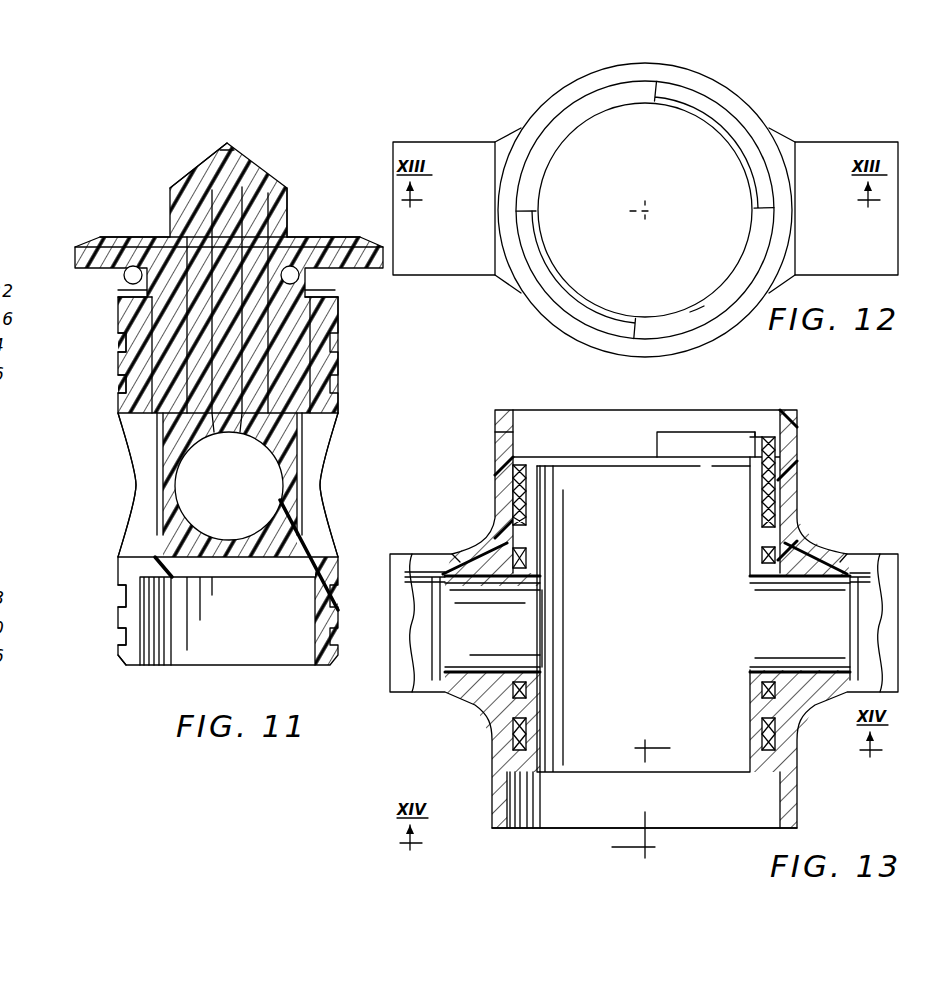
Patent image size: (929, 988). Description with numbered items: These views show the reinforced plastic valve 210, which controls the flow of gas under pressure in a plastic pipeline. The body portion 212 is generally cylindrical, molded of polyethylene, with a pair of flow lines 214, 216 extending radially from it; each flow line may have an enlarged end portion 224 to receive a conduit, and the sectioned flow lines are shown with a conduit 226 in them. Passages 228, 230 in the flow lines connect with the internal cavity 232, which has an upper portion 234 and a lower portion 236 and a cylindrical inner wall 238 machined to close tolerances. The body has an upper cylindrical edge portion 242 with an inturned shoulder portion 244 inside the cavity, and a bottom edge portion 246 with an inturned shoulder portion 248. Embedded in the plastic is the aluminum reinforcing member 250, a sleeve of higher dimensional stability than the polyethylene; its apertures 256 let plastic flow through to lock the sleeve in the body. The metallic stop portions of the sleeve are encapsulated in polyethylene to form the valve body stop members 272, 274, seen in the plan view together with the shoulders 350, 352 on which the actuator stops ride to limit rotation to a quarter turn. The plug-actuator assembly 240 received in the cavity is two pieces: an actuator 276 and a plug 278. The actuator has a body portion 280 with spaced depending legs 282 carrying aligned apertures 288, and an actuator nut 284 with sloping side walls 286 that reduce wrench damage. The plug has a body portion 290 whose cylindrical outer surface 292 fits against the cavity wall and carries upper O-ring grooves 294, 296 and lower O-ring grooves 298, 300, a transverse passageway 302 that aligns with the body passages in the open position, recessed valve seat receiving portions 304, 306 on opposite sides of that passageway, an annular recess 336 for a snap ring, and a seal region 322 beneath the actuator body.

In FIG. 12, the reinforced plastic valve 210 is at (531, 95).
In FIG. 13, the body portion 212 is at (855, 440).
In FIG. 13, the flow line 214 is at (440, 553).
In FIG. 13, the flow line 216 is at (832, 555).
In FIG. 13, the enlarged end portion 224 is at (866, 600).
In FIG. 13, the left tube 226 is at (418, 590).
In FIG. 13, the passage 228 is at (500, 638).
In FIG. 13, the passage 230 is at (802, 628).
In FIG. 13, the internal cavity 232 is at (662, 610).
In FIG. 13, the upper portion 234 is at (722, 495).
In FIG. 13, the lower portion 236 is at (720, 750).
In FIG. 13, the cylindrical inner wall 238 is at (752, 697).
In FIG. 11, the plug-actuator assembly 240 is at (124, 160).
In FIG. 13, the upper cylindrical edge portion 242 is at (786, 407).
In FIG. 13, the inturned shoulder portion 244 is at (513, 425).
In FIG. 13, the bottom edge portion 246 is at (504, 830).
In FIG. 13, the inturned shoulder portion 248 is at (530, 770).
In FIG. 13, the reinforcing member 250 is at (515, 476).
In FIG. 13, the apertures 256 is at (525, 535).
In FIG. 12, the valve body stop member 272 is at (720, 118).
In FIG. 13, the valve body stop member 272 is at (690, 440).
In FIG. 12, the valve body stop member 274 is at (560, 292).
In FIG. 11, the actuator 276 is at (296, 221).
In FIG. 11, the plug 278 is at (350, 385).
In FIG. 11, the body portion 280 is at (116, 243).
In FIG. 11, the depending legs 282 is at (244, 329).
In FIG. 11, the actuator nut 284 is at (226, 143).
In FIG. 11, the sloping side walls 286 is at (183, 182).
In FIG. 11, the aligned apertures 288 is at (145, 292).
In FIG. 11, the body portion 290 is at (234, 430).
In FIG. 11, the cylindrical outer surface 292 is at (120, 405).
In FIG. 11, the upper O-ring groove 294 is at (120, 343).
In FIG. 11, the upper O-ring groove 296 is at (120, 370).
In FIG. 11, the lower O-ring groove 298 is at (122, 600).
In FIG. 11, the lower O-ring groove 300 is at (122, 628).
In FIG. 11, the transverse passageway 302 is at (244, 495).
In FIG. 11, the recessed valve seat receiving portion 304 is at (144, 462).
In FIG. 11, the recessed valve seat receiving portion 306 is at (312, 452).
In FIG. 11, the seal loop 322 is at (92, 272).
In FIG. 11, the annular recess 336 is at (122, 652).
In FIG. 12, the shoulder 350 is at (572, 125).
In FIG. 13, the shoulder 350 is at (597, 455).
In FIG. 12, the shoulder 352 is at (706, 303).